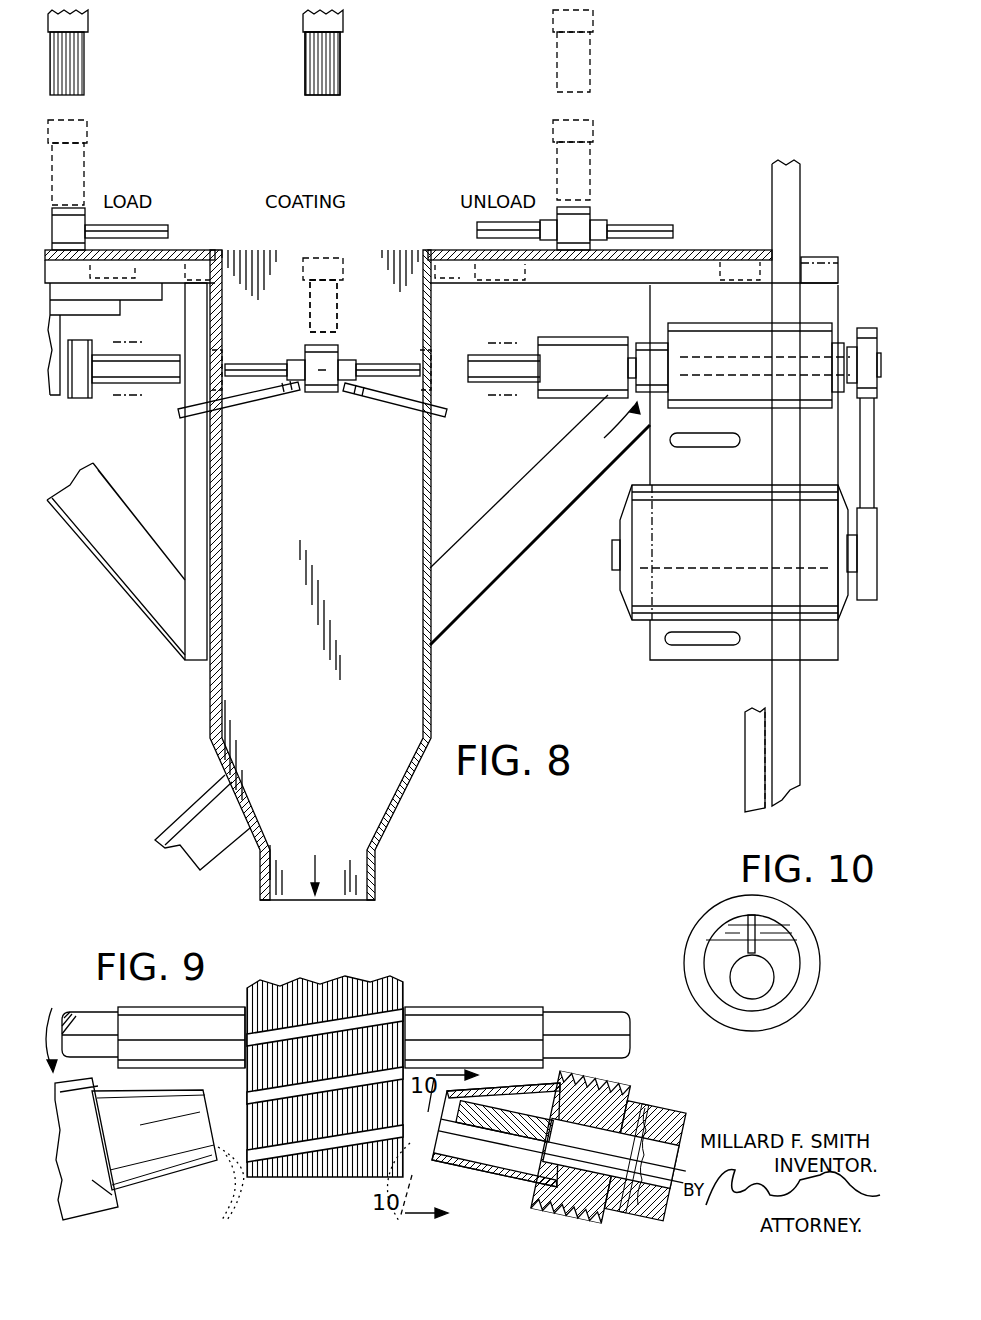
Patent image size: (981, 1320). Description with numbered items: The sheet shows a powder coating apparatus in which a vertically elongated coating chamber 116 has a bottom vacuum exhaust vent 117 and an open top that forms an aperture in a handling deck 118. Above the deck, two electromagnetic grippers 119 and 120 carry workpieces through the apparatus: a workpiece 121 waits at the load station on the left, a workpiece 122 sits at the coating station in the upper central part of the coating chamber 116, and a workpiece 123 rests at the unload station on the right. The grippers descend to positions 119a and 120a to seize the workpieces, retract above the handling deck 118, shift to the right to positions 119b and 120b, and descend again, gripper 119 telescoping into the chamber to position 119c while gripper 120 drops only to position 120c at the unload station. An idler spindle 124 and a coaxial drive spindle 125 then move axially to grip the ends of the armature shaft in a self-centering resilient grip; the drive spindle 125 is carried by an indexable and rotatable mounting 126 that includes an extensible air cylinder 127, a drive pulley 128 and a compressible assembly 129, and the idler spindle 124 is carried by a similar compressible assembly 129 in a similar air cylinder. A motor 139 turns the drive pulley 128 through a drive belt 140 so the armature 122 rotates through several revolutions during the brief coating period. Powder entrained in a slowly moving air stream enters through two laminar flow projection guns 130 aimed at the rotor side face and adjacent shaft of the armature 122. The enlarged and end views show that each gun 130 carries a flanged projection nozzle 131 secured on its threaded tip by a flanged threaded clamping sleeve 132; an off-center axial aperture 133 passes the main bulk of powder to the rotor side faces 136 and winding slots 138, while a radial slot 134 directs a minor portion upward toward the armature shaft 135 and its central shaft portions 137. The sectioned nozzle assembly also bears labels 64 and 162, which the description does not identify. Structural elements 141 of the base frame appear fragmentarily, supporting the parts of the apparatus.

In FIG. 9, the nut 64 is at (614, 1120).
In FIG. 8, the coating chamber 116 is at (432, 697).
In FIG. 8, the bottom vacuum exhaust vent 117 is at (335, 893).
In FIG. 8, the handling deck 118 is at (446, 250).
In FIG. 8, the electromagnetic gripper 119 is at (88, 62).
In FIG. 8, the gripper position 119a is at (82, 172).
In FIG. 8, the gripper position 119b is at (360, 63).
In FIG. 8, the gripper position 119c is at (306, 313).
In FIG. 8, the electromagnetic gripper 120 is at (340, 60).
In FIG. 8, the gripper position 120a is at (337, 322).
In FIG. 8, the gripper position 120b is at (590, 82).
In FIG. 8, the gripper position 120c is at (588, 165).
In FIG. 8, the workpiece 121 is at (80, 214).
In FIG. 8, the workpiece 122 is at (318, 394).
In FIG. 9, the workpiece 122 is at (390, 962).
In FIG. 8, the workpiece 123 is at (592, 217).
In FIG. 8, the idler spindle 124 is at (160, 386).
In FIG. 8, the drive spindle 125 is at (506, 376).
In FIG. 8, the indexable and rotatable mounting 126 is at (606, 430).
In FIG. 8, the extensible air cylinder 127 is at (722, 340).
In FIG. 8, the drive pulley 128 is at (862, 330).
In FIG. 8, the compressible assembly 129 is at (82, 400).
In FIG. 8, the laminar flow projection gun 130 is at (234, 402).
In FIG. 9, the laminar flow projection gun 130 is at (698, 1078).
In FIG. 9, the powder delivery nozzle 131 is at (160, 1160).
In FIG. 10, the powder delivery nozzle 131 is at (712, 965).
In FIG. 9, the flanged threaded clamping sleeve 132 is at (112, 1200).
In FIG. 10, the flanged threaded clamping sleeve 132 is at (690, 930).
In FIG. 9, the off-center axial aperture 133 is at (478, 1137).
In FIG. 10, the off-center axial aperture 133 is at (768, 978).
In FIG. 9, the radial slot 134 is at (518, 1122).
In FIG. 10, the radial slot 134 is at (745, 926).
In FIG. 8, the armature shaft 135 is at (160, 226).
In FIG. 9, the armature shaft 135 is at (583, 1040).
In FIG. 9, the rotor side faces 136 is at (246, 1082).
In FIG. 8, the central shaft portions 137 is at (600, 232).
In FIG. 9, the central shaft portions 137 is at (166, 1036).
In FIG. 9, the winding slots 138 is at (322, 1150).
In FIG. 8, the motor 139 is at (722, 546).
In FIG. 8, the drive belt 140 is at (858, 442).
In FIG. 8, the structural elements 141 is at (120, 572).
In FIG. 9, the seal 162 is at (648, 1166).